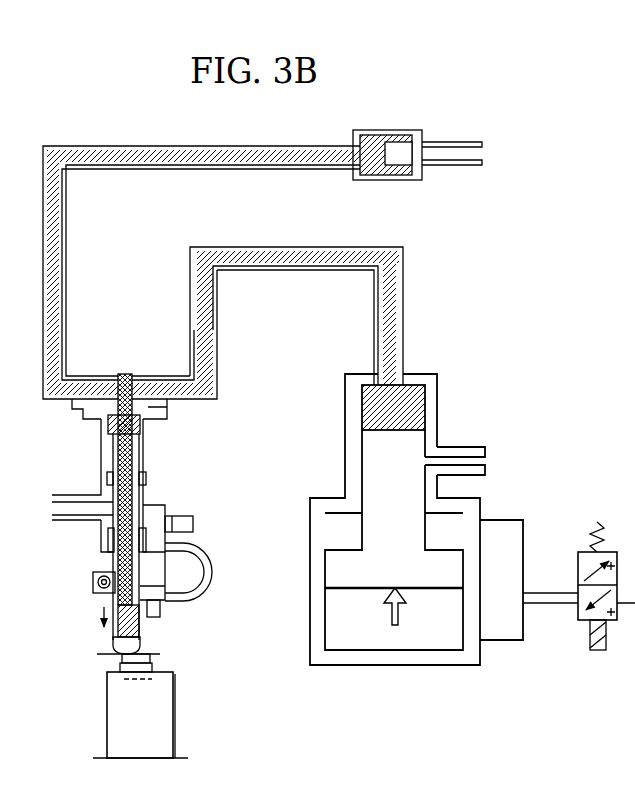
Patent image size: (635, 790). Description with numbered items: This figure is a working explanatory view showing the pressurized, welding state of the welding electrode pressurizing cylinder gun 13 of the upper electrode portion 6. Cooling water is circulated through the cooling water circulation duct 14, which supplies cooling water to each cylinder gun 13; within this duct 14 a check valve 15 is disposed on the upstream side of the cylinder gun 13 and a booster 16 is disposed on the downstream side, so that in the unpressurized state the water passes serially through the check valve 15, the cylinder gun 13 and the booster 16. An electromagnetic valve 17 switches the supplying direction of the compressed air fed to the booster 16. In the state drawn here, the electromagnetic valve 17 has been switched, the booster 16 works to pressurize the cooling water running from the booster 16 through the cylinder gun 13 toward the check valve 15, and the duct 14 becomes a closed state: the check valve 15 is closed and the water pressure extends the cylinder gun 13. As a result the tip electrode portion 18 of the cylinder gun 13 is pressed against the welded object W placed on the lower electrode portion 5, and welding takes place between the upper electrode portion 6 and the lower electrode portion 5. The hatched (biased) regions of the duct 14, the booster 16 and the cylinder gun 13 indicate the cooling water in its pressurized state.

The cooling water circulation duct 14 is at (185, 304).
The check valve 15 is at (420, 190).
The booster 16 is at (318, 450).
The electromagnetic valve 17 is at (593, 512).
The welding electrode pressurizing cylinder gun 13 is at (155, 495).
The upper electrode portion 6 is at (198, 618).
The tip electrode portion 18 is at (143, 640).
The lower electrode portion 5 is at (200, 710).
The welded object W is at (103, 657).